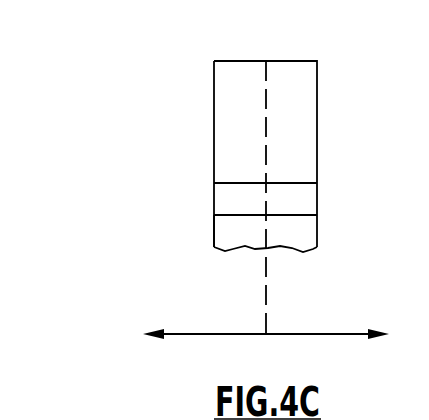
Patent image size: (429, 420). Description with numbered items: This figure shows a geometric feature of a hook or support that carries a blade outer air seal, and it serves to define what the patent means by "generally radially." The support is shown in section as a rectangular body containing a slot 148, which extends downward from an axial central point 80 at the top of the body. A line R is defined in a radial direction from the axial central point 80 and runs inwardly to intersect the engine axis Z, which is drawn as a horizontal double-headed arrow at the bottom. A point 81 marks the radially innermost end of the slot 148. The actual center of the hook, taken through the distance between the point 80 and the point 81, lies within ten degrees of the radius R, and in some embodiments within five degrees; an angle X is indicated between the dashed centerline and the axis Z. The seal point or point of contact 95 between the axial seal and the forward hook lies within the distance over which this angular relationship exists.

The slot 148 is at (305, 197).
The axial central point 80 is at (266, 61).
The line R is at (265, 123).
The seal point 95 is at (213, 230).
The point 81 is at (265, 217).
The angle X is at (266, 298).
The axis Z is at (322, 334).